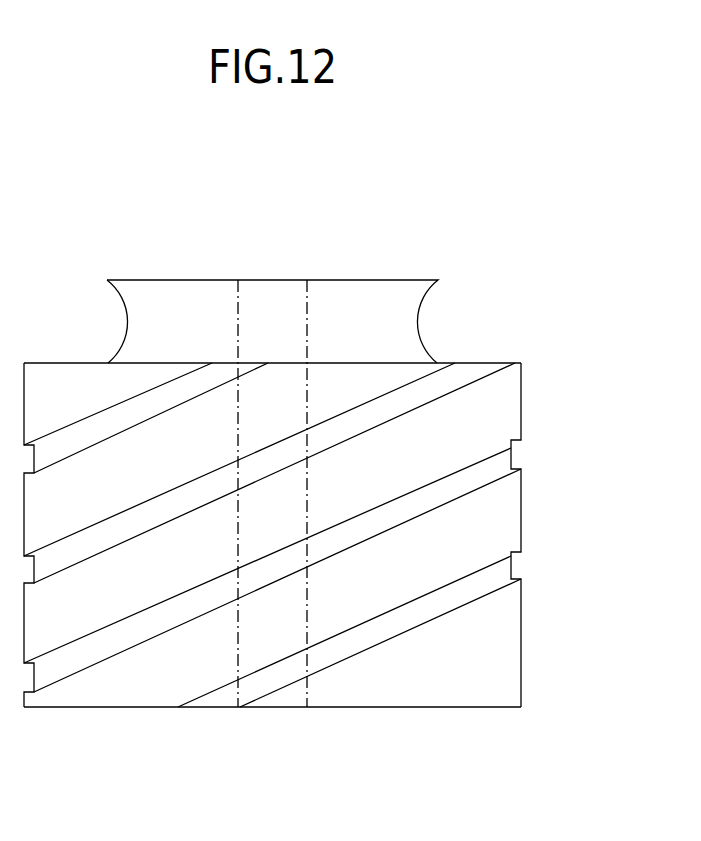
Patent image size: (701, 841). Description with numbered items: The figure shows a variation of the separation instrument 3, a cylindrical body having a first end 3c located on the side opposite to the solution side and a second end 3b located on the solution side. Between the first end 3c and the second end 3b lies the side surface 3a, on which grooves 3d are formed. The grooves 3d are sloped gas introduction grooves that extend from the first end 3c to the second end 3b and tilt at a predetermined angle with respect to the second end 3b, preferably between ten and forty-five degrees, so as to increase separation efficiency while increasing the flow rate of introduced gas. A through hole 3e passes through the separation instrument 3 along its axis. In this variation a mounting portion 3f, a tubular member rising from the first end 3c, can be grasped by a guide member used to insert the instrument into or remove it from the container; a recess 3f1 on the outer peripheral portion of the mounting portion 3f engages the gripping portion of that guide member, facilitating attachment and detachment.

The separation instrument 3 is at (283, 199).
The side surface 3a is at (523, 523).
The second end 3b is at (478, 708).
The first end 3c is at (465, 362).
The grooves 3d is at (500, 466).
The through hole 3e is at (308, 327).
The mounting portion 3f is at (240, 288).
The recess 3f1 is at (128, 322).